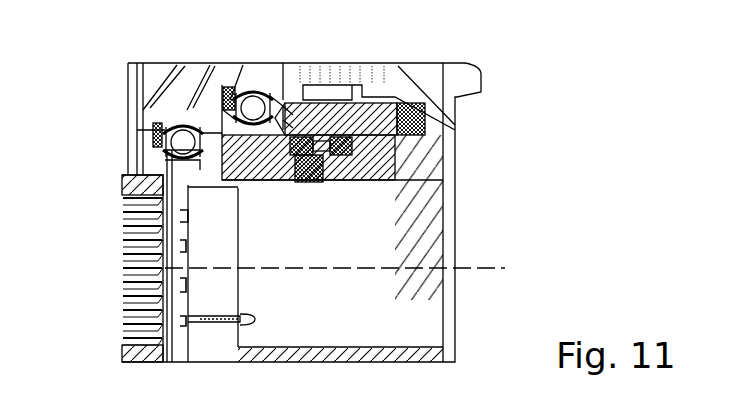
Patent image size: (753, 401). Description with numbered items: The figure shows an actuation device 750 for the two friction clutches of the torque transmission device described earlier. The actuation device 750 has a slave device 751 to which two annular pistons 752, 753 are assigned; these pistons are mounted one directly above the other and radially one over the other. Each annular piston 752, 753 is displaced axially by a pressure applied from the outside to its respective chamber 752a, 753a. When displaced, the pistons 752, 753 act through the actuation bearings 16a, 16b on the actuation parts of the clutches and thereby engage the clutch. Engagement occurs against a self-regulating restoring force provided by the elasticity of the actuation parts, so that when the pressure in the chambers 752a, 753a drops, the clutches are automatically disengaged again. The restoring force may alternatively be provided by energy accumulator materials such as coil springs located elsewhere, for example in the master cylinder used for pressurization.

The actuation device 750 is at (486, 113).
The slave device 751 is at (404, 59).
The annular piston 752 is at (273, 157).
The chamber 752a is at (338, 170).
The annular piston 753 is at (335, 130).
The chamber 753a is at (428, 124).
The actuation bearing 16a is at (244, 96).
The actuation bearing 16b is at (160, 136).